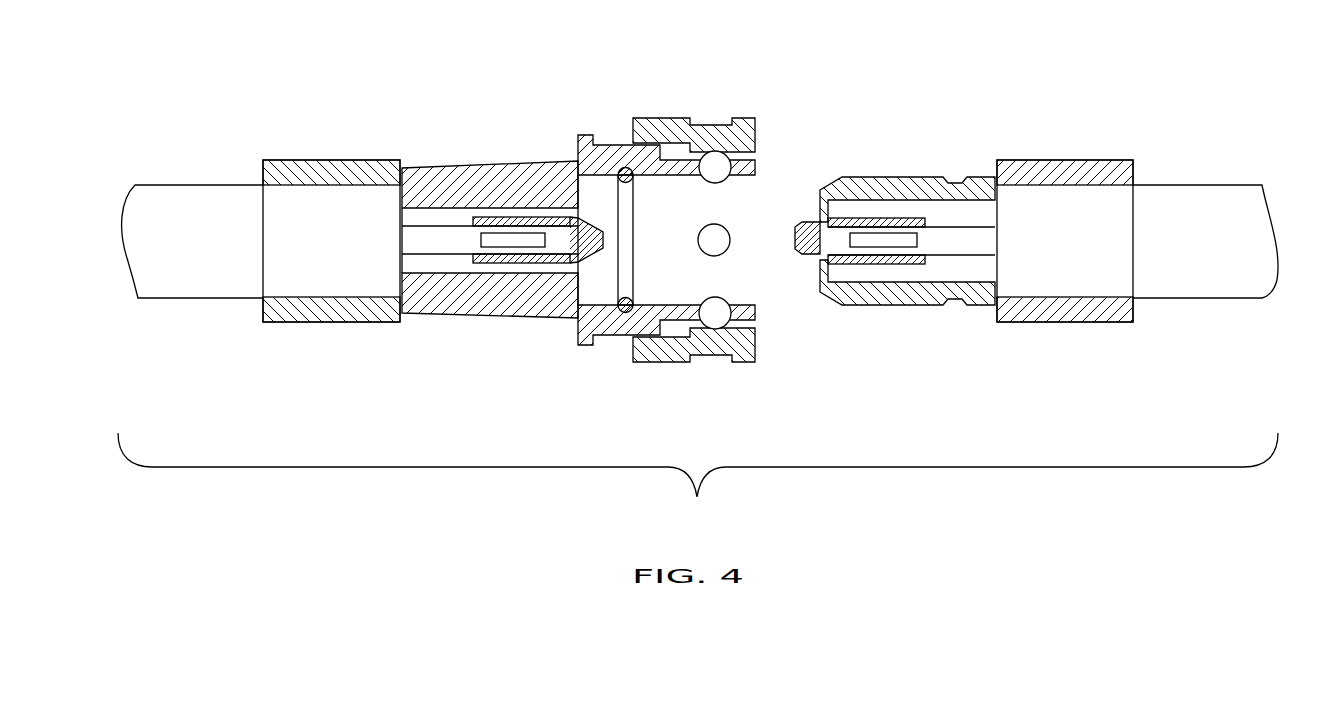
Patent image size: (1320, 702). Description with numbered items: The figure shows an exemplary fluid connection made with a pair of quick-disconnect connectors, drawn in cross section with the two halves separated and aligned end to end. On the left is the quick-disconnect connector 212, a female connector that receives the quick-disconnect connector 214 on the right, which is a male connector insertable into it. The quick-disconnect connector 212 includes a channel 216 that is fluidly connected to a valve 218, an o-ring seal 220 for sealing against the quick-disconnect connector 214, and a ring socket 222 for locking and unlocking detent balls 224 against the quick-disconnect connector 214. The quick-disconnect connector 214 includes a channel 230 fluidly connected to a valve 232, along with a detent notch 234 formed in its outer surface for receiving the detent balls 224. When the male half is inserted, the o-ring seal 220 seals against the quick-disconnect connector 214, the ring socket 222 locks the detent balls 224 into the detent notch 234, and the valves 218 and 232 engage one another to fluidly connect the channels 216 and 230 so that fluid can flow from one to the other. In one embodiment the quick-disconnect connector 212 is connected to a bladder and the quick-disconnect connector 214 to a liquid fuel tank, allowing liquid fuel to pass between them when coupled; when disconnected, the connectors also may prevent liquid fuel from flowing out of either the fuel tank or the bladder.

The quick-disconnect connector 212 is at (285, 147).
The quick-disconnect connector 214 is at (1127, 150).
The channel 216 is at (217, 303).
The valve 218 is at (522, 207).
The o-ring seal 220 is at (612, 230).
The ring socket 222 is at (623, 355).
The detent balls 224 is at (738, 228).
The channel 230 is at (1183, 303).
The valve 232 is at (867, 213).
The detent notch 234 is at (957, 308).